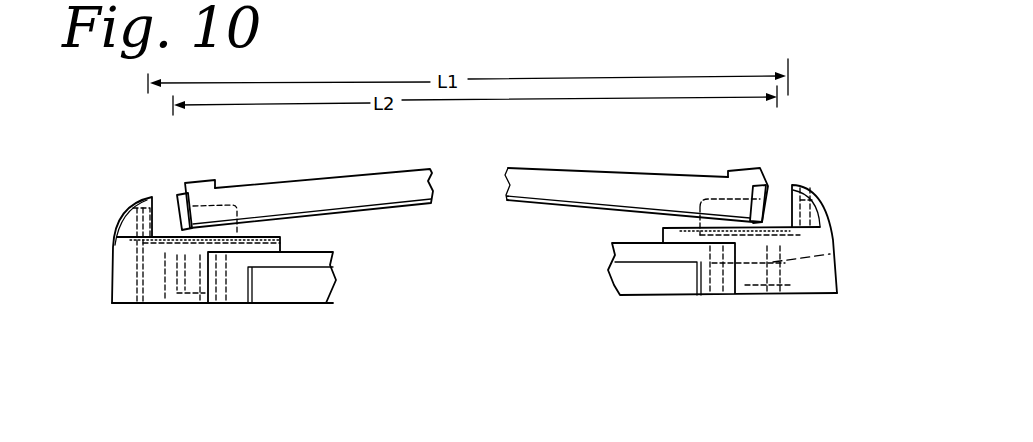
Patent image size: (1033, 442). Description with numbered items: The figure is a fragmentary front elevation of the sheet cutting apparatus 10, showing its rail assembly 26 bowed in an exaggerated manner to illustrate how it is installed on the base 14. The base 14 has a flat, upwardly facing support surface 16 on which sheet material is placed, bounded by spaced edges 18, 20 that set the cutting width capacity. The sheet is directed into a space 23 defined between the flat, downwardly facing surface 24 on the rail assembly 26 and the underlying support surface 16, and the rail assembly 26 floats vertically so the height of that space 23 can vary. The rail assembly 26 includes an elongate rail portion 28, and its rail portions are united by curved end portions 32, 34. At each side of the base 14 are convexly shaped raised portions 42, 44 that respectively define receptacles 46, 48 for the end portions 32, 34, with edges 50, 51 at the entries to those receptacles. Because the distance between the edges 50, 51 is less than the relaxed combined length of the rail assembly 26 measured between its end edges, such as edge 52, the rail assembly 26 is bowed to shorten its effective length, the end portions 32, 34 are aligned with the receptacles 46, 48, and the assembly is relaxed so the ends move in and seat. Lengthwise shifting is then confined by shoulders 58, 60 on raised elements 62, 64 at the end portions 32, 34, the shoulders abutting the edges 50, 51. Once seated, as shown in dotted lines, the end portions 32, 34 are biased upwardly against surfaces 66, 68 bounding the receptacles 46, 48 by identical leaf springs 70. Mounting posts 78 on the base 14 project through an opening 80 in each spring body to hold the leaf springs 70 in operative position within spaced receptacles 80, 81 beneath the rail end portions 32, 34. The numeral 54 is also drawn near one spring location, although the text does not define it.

The sheet cutting apparatus 10 is at (846, 318).
The base 14 is at (242, 278).
The support surface 16 is at (320, 247).
The edge 18 is at (280, 236).
The edge 20 is at (663, 236).
The space 23 is at (272, 228).
The downwardly facing surface 24 is at (546, 207).
The rail assembly 26 is at (396, 166).
The first rail portion 28 is at (298, 190).
The end portion 32 is at (200, 186).
The end portion 34 is at (755, 184).
The raised portion 42 is at (118, 228).
The raised portion 44 is at (823, 205).
The receptacle 46 is at (140, 210).
The receptacle 48 is at (812, 222).
The edge 50 is at (176, 194).
The edge 51 is at (777, 188).
The edge 52 is at (182, 197).
The pivot arm 54 is at (772, 205).
The shoulder 58 is at (193, 192).
The shoulder 60 is at (764, 188).
The raised element 62 is at (195, 199).
The raised element 64 is at (728, 176).
The surface 66 is at (121, 207).
The surface 68 is at (803, 188).
The leaf spring 70 is at (185, 303).
The mounting post 78 is at (200, 303).
The receptacle 80 is at (167, 303).
The receptacle 81 is at (835, 249).